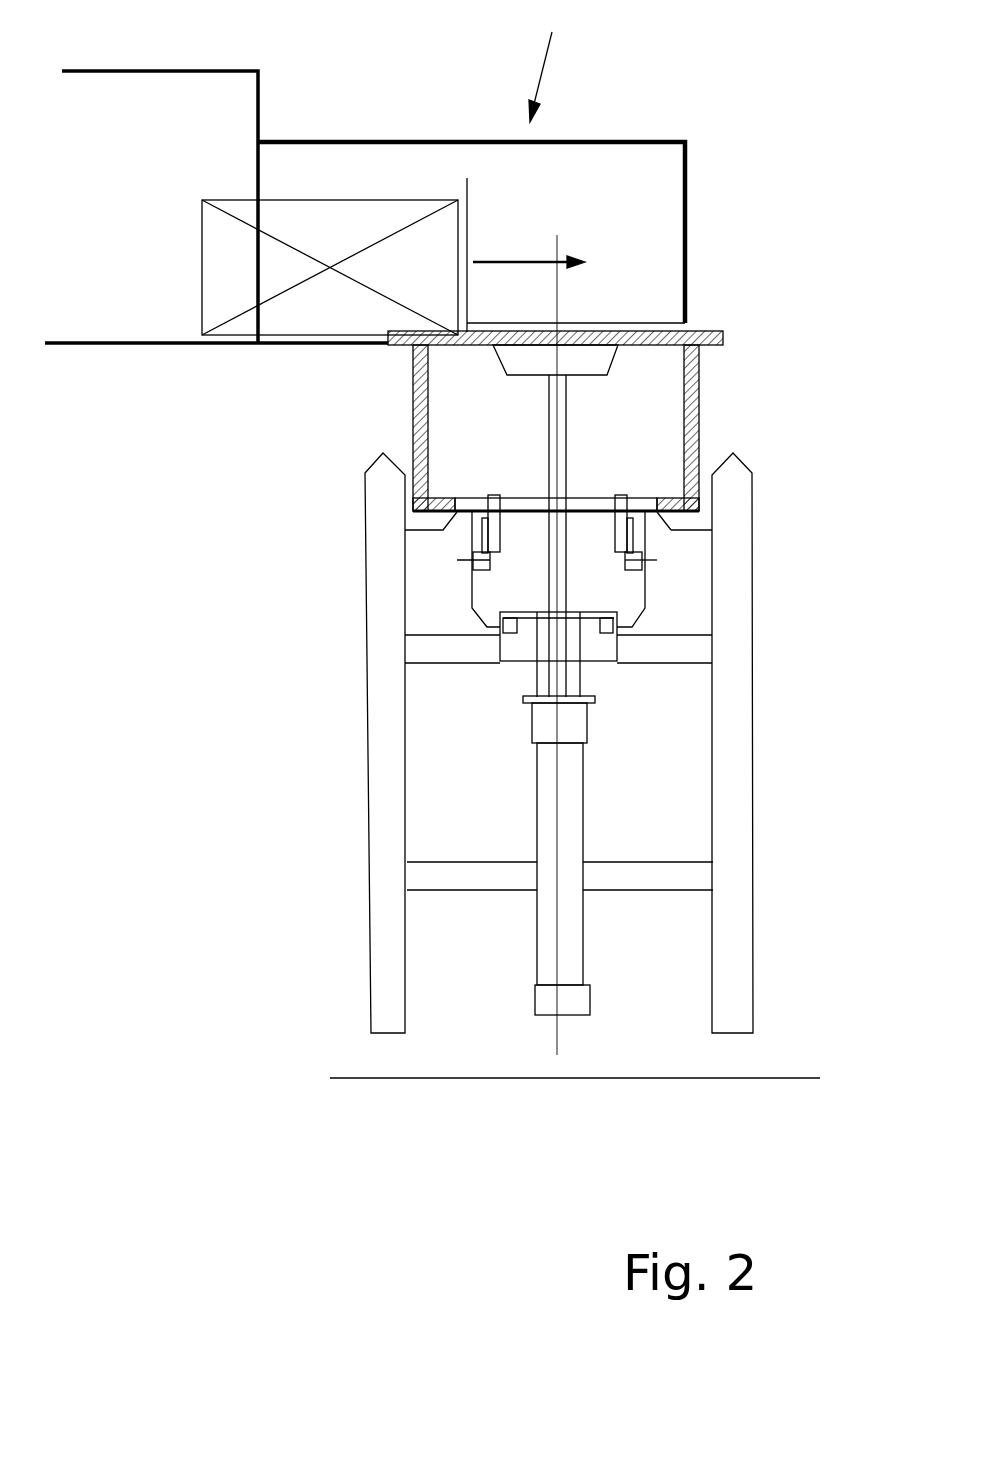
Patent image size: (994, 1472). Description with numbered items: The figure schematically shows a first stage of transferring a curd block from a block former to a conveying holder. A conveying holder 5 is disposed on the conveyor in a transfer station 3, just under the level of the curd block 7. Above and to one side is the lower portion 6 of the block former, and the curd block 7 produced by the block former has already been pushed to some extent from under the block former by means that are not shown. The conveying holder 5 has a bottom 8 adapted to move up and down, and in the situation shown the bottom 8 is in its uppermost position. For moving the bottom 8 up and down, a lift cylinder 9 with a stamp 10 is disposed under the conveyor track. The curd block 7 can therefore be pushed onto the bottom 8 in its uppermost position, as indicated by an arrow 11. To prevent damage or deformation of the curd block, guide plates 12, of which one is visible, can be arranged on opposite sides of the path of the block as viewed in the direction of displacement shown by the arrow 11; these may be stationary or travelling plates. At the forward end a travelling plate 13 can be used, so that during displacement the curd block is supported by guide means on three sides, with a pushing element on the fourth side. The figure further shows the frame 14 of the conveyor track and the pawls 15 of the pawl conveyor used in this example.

The transfer station 3 is at (547, 61).
The conveying holder 5 is at (718, 385).
The lower portion of block former 6 is at (172, 151).
The curd block 7 is at (437, 247).
The bottom 8 is at (665, 328).
The lift cylinder 9 is at (570, 795).
The stamp 10 is at (588, 360).
The arrow 11 is at (527, 258).
The guide plate 12 is at (670, 185).
The travelling plate 13 is at (468, 206).
The frame 14 is at (733, 830).
The pawls 15 is at (498, 547).